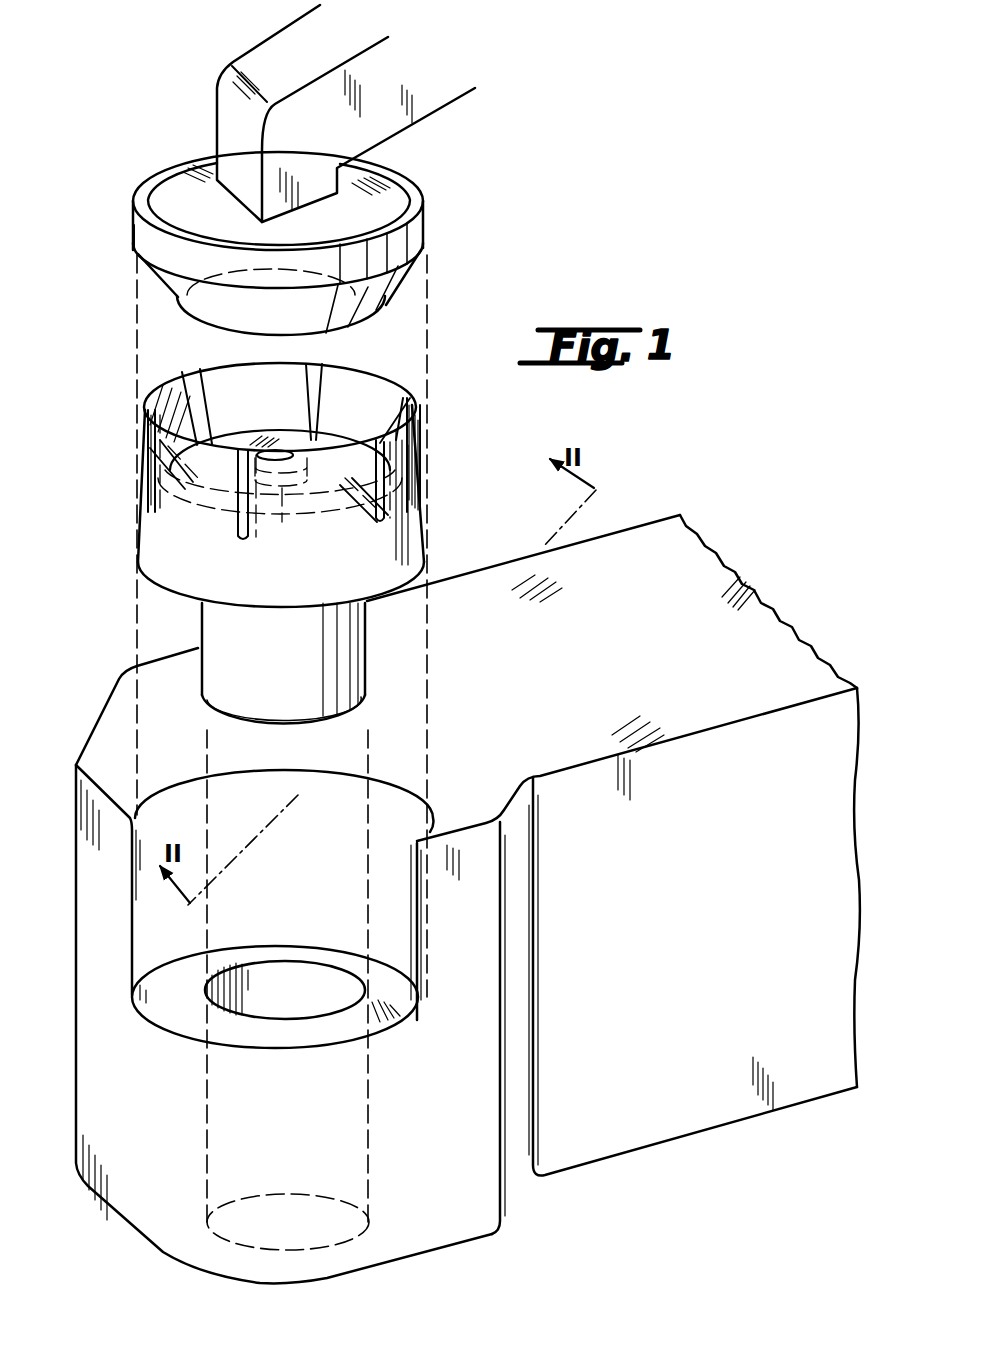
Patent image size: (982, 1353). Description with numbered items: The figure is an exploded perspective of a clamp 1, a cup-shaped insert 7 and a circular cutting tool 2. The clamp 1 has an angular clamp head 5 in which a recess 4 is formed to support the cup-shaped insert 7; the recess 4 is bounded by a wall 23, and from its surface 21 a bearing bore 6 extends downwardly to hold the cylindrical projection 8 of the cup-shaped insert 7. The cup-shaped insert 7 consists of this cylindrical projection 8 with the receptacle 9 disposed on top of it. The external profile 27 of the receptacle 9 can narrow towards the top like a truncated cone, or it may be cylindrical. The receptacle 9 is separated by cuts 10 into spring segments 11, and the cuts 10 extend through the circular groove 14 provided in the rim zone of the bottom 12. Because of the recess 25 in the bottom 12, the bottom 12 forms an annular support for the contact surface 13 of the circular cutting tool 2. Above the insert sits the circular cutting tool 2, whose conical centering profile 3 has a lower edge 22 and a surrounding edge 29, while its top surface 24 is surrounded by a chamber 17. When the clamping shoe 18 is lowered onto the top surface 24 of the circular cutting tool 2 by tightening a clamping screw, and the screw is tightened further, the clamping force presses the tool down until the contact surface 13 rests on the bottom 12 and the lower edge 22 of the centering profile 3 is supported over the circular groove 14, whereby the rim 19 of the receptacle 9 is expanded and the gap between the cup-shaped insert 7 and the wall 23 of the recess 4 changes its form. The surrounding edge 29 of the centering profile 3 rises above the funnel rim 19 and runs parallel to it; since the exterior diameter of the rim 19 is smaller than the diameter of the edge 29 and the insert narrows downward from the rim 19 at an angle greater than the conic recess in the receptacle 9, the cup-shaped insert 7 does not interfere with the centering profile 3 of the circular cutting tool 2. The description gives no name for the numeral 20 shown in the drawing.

The clamp 1 is at (708, 510).
The circular cutting tool 2 is at (128, 181).
The centering profile 3 is at (163, 294).
The recess 4 is at (313, 853).
The clamp head 5 is at (110, 1055).
The bearing bore 6 is at (285, 977).
The cup-shaped insert 7 is at (133, 462).
The cylindrical projection 8 is at (197, 640).
The receptacle 9 is at (382, 400).
The cuts 10 is at (190, 387).
The spring segments 11 is at (341, 414).
The bottom 12 is at (233, 446).
The contact surface 13 is at (314, 322).
The circular groove 14 is at (280, 433).
The chamber 17 is at (420, 188).
The clamping shoe 18 is at (247, 68).
The rim 19 is at (160, 388).
The cylindrical band 20 is at (150, 284).
The surface 21 is at (163, 990).
The lower edge 22 is at (266, 344).
The wall 23 is at (398, 797).
The top surface 24 is at (200, 163).
The recess 25 is at (282, 468).
The external profile 27 is at (424, 487).
The surrounding edge 29 is at (147, 271).